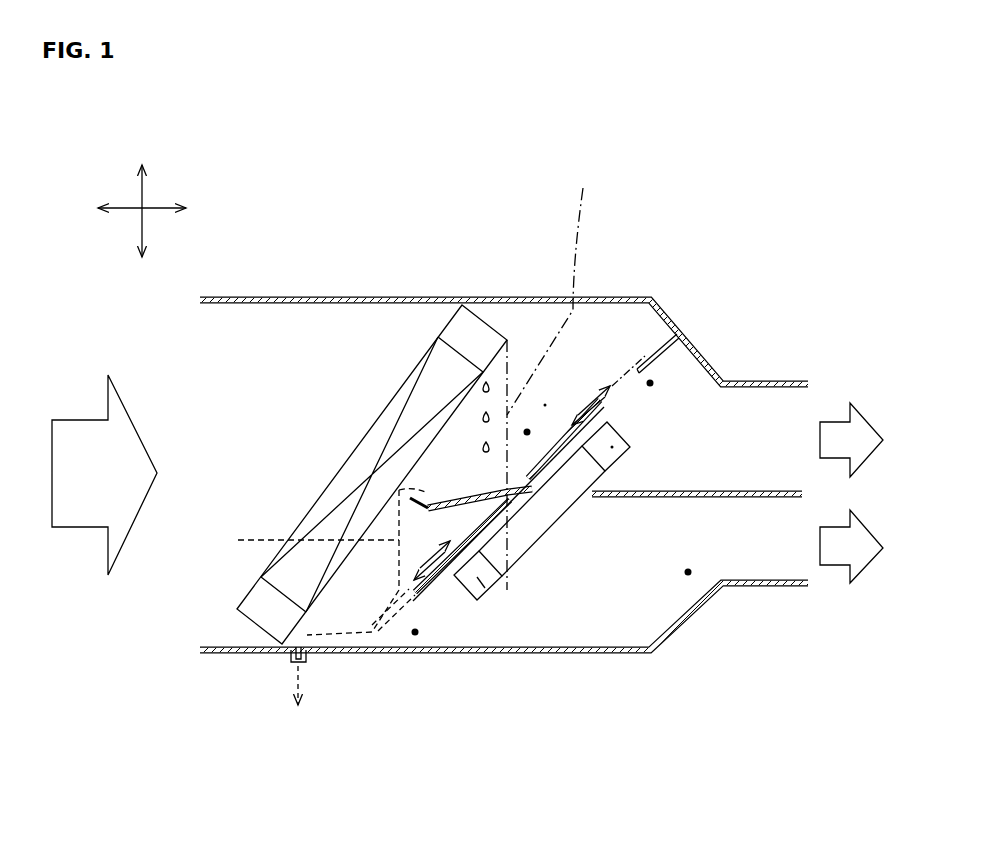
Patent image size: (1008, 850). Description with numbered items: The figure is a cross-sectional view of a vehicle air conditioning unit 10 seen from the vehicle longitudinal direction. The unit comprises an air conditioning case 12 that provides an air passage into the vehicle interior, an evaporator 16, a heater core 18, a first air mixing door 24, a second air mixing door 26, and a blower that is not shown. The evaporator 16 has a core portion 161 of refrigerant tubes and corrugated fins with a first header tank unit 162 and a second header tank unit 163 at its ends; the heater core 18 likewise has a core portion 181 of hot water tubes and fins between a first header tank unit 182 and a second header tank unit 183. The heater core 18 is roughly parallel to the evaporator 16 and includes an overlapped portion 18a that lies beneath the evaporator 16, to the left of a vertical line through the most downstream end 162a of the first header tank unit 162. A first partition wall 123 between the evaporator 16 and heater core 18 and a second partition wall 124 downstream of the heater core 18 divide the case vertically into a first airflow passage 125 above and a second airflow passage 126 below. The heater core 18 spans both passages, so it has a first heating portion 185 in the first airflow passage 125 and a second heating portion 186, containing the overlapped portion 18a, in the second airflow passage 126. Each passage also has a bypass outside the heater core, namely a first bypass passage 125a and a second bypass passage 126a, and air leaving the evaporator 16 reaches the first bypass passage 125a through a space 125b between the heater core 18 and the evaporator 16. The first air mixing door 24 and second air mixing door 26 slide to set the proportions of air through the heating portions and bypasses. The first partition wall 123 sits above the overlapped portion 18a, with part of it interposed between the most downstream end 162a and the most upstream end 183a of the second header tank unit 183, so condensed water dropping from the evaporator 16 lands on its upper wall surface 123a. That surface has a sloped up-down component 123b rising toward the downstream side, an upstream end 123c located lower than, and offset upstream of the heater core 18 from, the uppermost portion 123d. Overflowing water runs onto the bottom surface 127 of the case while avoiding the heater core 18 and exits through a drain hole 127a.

The vehicle air conditioning unit 10 is at (797, 237).
The air conditioning case 12 is at (592, 296).
The evaporator 16 is at (377, 413).
The heater core 18 is at (555, 545).
The overlapped portion 18a is at (506, 592).
The first air mixing door 24 is at (676, 332).
The second air mixing door 26 is at (496, 585).
The first partition wall 123 is at (458, 508).
The upper wall surface 123a is at (440, 497).
The up-down component 123b is at (497, 492).
The upstream end 123c is at (418, 496).
The uppermost portion 123d is at (607, 420).
The second partition wall 124 is at (787, 387).
The first airflow passage 125 is at (758, 387).
The first bypass passage 125a is at (612, 447).
The space 125b is at (545, 405).
The second airflow passage 126 is at (688, 572).
The second bypass passage 126a is at (415, 632).
The bottom surface 127 is at (228, 647).
The drain hole 127a is at (297, 667).
The core portion 161 is at (423, 387).
The first header tank unit 162 is at (500, 340).
The most downstream end 162a is at (490, 388).
The second header tank unit 163 is at (253, 606).
The core portion 181 is at (530, 540).
The first header tank unit 182 is at (650, 383).
The second header tank unit 183 is at (460, 568).
The most upstream end 183a is at (418, 600).
The first heating portion 185 is at (612, 470).
The second heating portion 186 is at (557, 527).